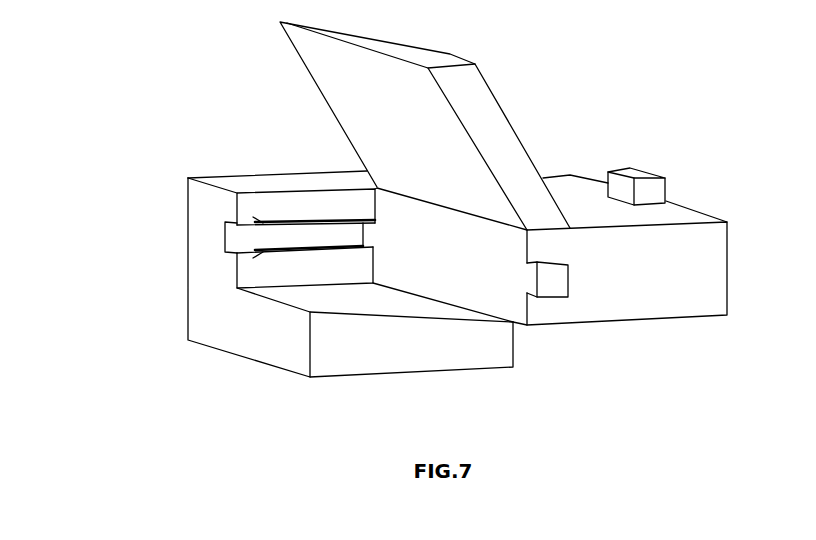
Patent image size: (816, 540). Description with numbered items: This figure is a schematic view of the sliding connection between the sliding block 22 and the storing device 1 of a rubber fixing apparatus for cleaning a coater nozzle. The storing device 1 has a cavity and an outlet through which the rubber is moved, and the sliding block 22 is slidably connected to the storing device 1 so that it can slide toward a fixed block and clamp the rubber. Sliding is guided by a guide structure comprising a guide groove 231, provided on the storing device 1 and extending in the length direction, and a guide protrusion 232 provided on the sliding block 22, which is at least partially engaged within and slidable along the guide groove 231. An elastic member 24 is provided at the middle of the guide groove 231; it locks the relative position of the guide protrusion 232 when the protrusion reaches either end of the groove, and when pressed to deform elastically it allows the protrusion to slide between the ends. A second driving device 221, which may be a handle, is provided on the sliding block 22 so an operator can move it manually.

The storing device 1 is at (245, 308).
The sliding block 22 is at (512, 165).
The second driving device 221 is at (640, 183).
The elastic member 24 is at (300, 222).
The guide groove 231 is at (245, 233).
The guide protrusion 232 is at (560, 290).